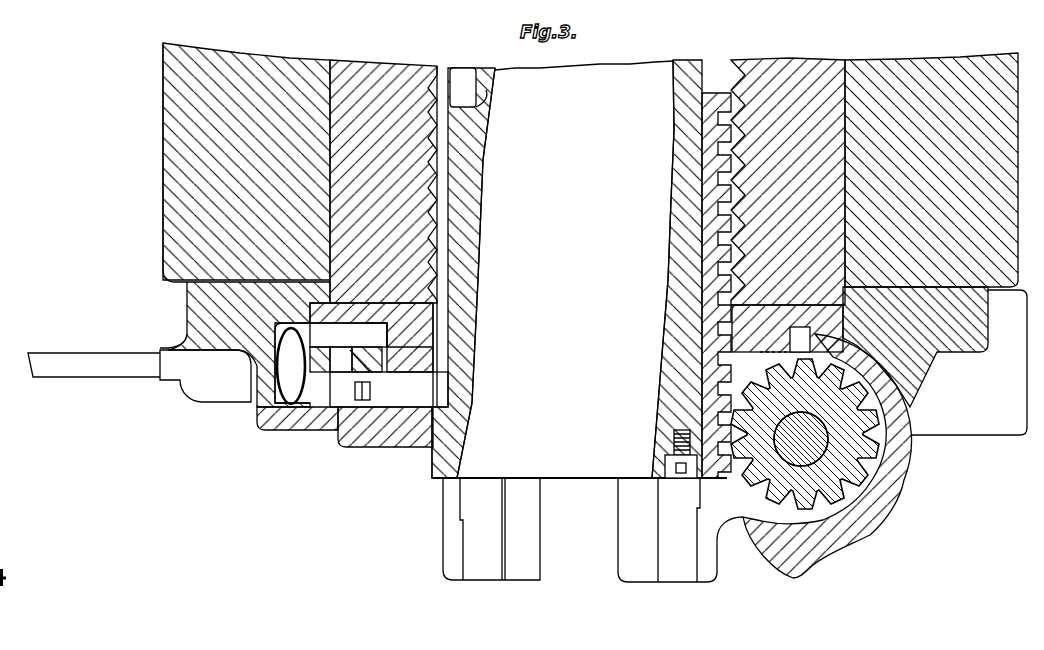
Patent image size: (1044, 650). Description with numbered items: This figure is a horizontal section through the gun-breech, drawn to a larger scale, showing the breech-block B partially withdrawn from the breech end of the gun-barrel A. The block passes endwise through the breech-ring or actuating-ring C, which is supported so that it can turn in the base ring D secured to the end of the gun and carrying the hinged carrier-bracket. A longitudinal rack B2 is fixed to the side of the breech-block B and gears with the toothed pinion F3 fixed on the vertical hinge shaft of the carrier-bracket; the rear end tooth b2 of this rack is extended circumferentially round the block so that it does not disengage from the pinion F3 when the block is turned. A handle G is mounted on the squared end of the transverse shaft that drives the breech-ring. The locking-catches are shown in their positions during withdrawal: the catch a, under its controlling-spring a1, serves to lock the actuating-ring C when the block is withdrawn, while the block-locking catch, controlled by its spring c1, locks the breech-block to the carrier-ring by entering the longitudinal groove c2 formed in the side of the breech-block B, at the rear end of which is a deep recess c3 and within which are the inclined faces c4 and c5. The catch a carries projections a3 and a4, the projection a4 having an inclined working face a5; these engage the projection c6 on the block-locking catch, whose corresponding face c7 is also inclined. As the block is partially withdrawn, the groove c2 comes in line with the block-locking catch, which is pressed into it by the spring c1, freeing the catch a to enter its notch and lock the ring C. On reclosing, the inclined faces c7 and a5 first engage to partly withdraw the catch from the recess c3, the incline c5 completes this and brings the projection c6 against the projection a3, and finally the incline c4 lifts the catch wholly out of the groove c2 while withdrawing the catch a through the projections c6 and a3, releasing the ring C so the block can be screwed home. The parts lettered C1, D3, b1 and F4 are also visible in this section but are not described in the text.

The breech end of the gun-barrel A is at (590, 174).
The breech-block B is at (565, 269).
The longitudinal rack B2 is at (691, 269).
The breech-ring or actuating-ring C is at (389, 389).
The slide housing C1 is at (576, 337).
The base ring D is at (187, 301).
The casing legs D3 is at (593, 530).
The handle G is at (139, 376).
The catch a is at (348, 335).
The controlling-spring a1 is at (292, 363).
The projection a3 is at (320, 359).
The projection a4 is at (366, 359).
The working face a5 is at (372, 335).
The lower block b1 is at (385, 427).
The rear end tooth b2 is at (716, 482).
The controlling-spring c1 is at (330, 430).
The longitudinal groove c2 is at (447, 351).
The deep recess c3 is at (463, 87).
The inclined face c4 is at (466, 428).
The inclined face c5 is at (483, 110).
The projection c6 is at (341, 359).
The inclined face c7 is at (358, 335).
The toothed pinion F3 is at (805, 434).
The gear shaft F4 is at (801, 439).